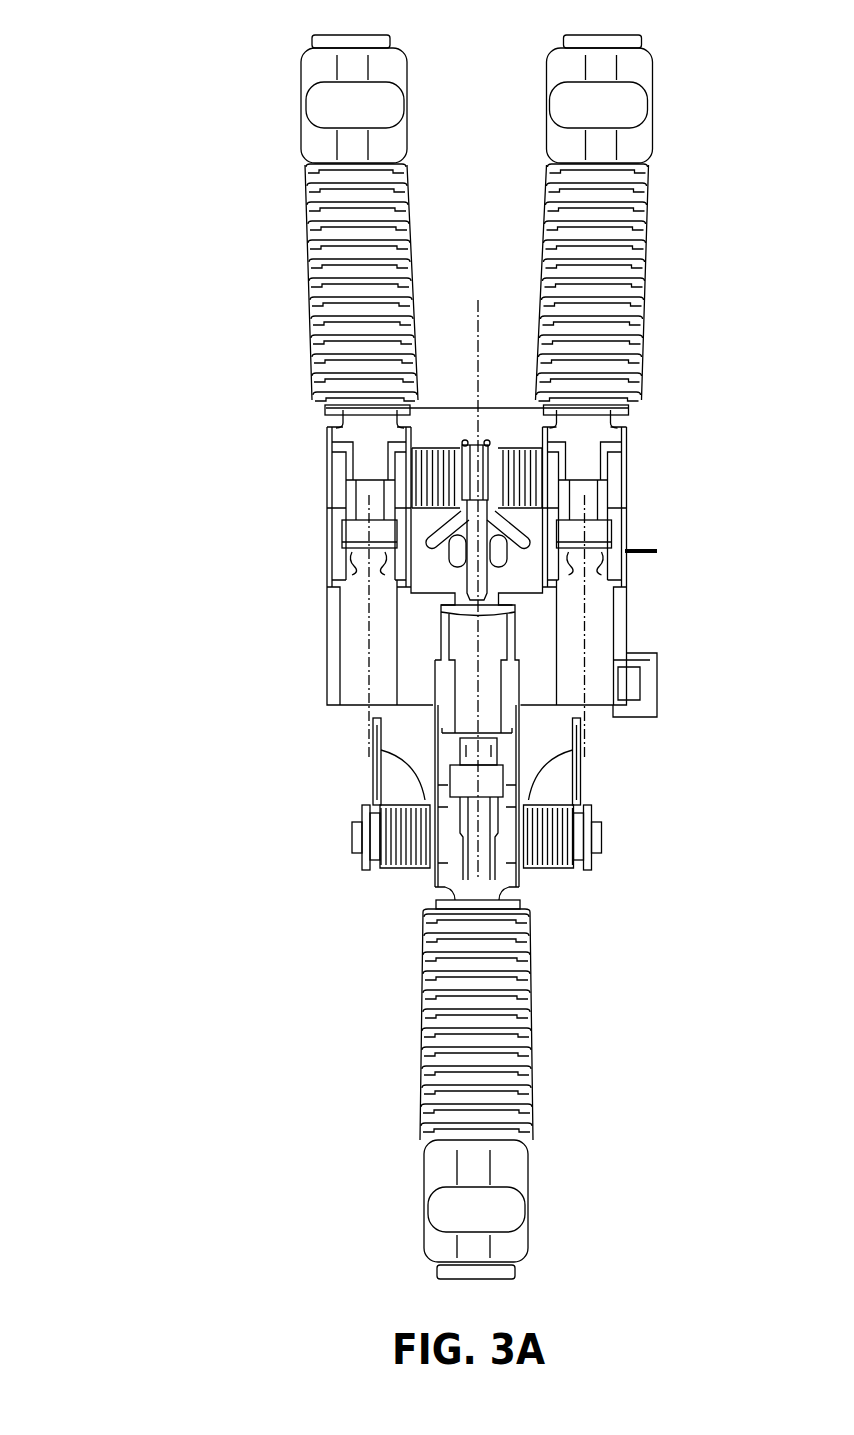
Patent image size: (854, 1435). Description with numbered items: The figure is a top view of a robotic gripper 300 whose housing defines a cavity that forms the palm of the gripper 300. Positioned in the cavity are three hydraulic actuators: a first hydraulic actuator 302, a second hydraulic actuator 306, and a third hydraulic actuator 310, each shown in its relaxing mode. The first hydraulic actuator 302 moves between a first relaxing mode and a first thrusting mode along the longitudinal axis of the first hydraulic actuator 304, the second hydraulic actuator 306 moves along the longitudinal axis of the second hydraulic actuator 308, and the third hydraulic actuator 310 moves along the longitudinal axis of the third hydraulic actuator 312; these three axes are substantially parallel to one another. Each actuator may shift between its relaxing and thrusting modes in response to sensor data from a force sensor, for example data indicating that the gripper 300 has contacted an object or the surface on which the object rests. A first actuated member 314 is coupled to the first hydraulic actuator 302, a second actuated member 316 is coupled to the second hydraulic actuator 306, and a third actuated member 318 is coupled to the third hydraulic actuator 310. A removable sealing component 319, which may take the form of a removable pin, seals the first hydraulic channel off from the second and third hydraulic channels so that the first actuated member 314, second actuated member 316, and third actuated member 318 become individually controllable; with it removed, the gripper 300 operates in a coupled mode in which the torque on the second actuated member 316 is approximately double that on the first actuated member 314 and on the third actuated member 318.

The gripper 300 is at (134, 180).
The first hydraulic actuator 302 is at (352, 670).
The longitudinal axis of the first hydraulic actuator 304 is at (357, 746).
The second hydraulic actuator 306 is at (463, 682).
The longitudinal axis of the second hydraulic actuator 308 is at (478, 306).
The third hydraulic actuator 310 is at (603, 628).
The longitudinal axis of the third hydraulic actuator 312 is at (590, 753).
The first actuated member 314 is at (305, 235).
The second actuated member 316 is at (510, 1083).
The third actuated member 318 is at (648, 228).
The removable sealing component 319 is at (640, 551).